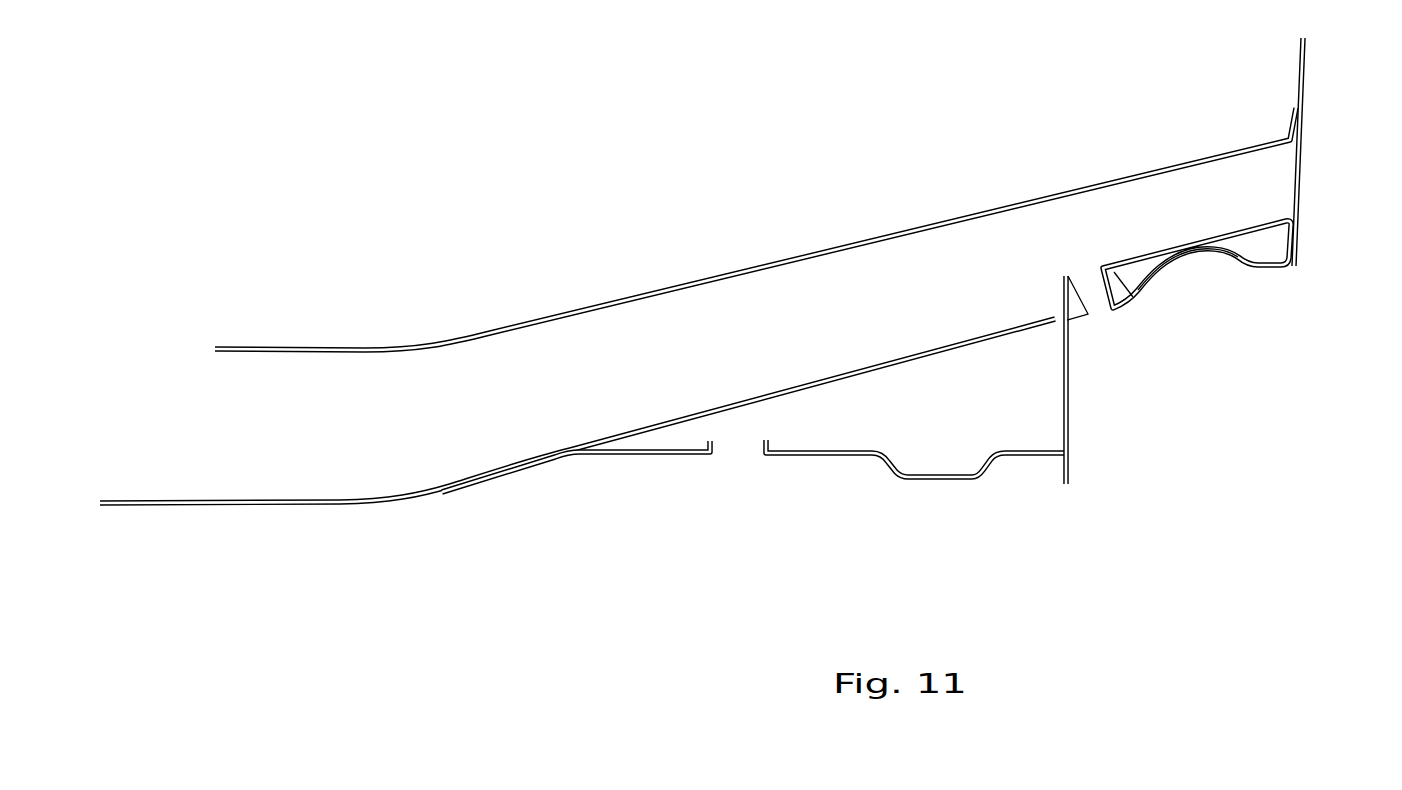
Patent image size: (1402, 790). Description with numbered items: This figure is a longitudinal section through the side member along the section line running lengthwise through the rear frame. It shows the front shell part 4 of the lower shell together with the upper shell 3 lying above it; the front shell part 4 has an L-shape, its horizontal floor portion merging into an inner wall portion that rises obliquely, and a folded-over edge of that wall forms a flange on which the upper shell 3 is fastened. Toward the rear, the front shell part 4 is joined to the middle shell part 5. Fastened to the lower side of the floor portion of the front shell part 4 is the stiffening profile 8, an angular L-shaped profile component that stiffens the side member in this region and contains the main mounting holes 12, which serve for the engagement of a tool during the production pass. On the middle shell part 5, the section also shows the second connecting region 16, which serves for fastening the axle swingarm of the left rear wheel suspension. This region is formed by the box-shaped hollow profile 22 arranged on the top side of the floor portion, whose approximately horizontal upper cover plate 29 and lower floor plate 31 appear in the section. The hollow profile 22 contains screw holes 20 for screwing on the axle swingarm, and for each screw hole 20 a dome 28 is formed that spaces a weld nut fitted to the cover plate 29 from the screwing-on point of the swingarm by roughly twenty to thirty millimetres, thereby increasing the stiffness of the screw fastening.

The upper shell 3 is at (717, 277).
The front shell part 4 is at (284, 505).
The middle shell part 5 is at (1300, 193).
The stiffening profile 8 is at (673, 455).
The main mounting holes 12 is at (742, 450).
The second connecting region 16 is at (1240, 208).
The screw holes 20 is at (1099, 311).
The box-shaped hollow profile 22 is at (1157, 247).
The dome 28 is at (1122, 307).
The upper cover plate 29 is at (1164, 270).
The lower floor plate 31 is at (1213, 256).